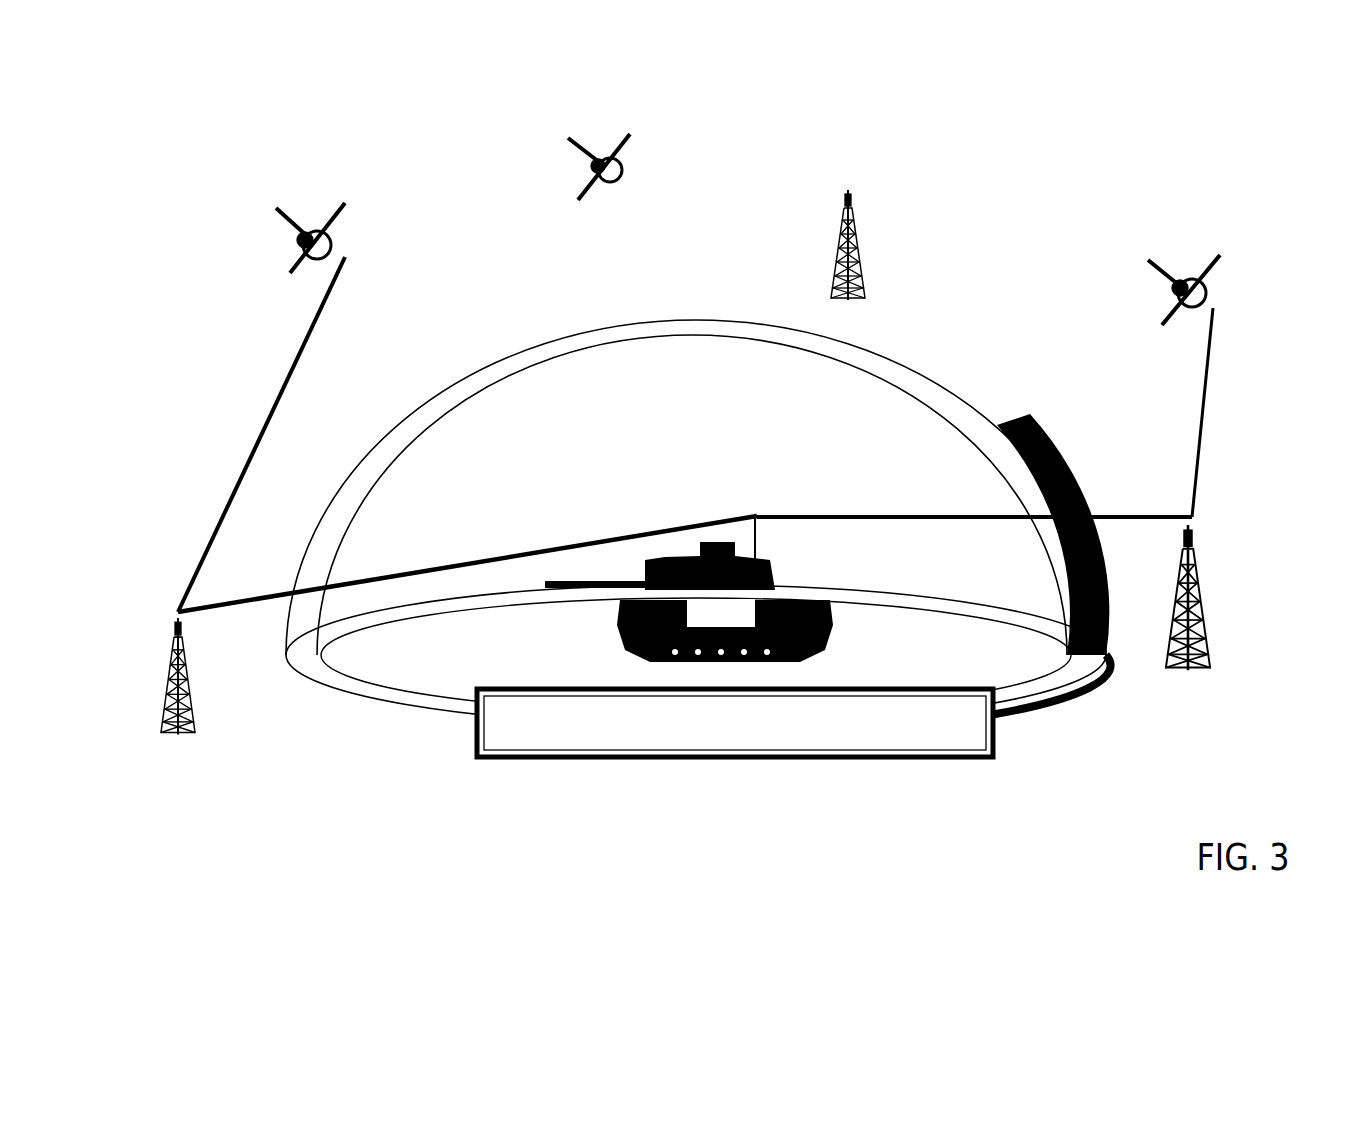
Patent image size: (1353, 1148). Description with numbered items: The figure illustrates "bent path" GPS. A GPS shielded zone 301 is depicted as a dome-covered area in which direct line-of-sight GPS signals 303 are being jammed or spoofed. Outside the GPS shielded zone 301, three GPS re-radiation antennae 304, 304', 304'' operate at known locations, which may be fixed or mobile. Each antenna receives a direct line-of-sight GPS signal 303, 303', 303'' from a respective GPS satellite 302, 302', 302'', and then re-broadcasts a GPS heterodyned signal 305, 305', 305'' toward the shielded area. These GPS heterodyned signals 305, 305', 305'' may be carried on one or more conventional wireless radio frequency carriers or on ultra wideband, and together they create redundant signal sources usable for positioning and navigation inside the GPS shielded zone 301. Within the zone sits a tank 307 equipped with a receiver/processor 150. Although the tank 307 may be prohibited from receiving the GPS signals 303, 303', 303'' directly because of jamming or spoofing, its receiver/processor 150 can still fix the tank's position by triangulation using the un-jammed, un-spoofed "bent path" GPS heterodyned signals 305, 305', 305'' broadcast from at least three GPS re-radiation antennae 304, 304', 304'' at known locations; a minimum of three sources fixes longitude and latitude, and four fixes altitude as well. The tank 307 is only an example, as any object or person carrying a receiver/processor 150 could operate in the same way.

The GPS shielded zone 301 is at (698, 538).
The GPS satellite 302 is at (301, 206).
The GPS satellite 302' is at (592, 132).
The GPS satellite 302'' is at (1196, 254).
The GPS signal 303 is at (261, 434).
The GPS signal 303' is at (727, 146).
The GPS signal 303'' is at (1228, 412).
The GPS re-radiation antenna 304 is at (182, 740).
The GPS re-radiation antenna 304' is at (929, 249).
The GPS re-radiation antenna 304'' is at (1180, 668).
The GPS heterodyned signal 305 is at (467, 538).
The GPS heterodyned signal 305' is at (693, 437).
The GPS heterodyned signal 305'' is at (974, 470).
The receiver/processor 150 is at (776, 543).
The tank 307 is at (689, 602).